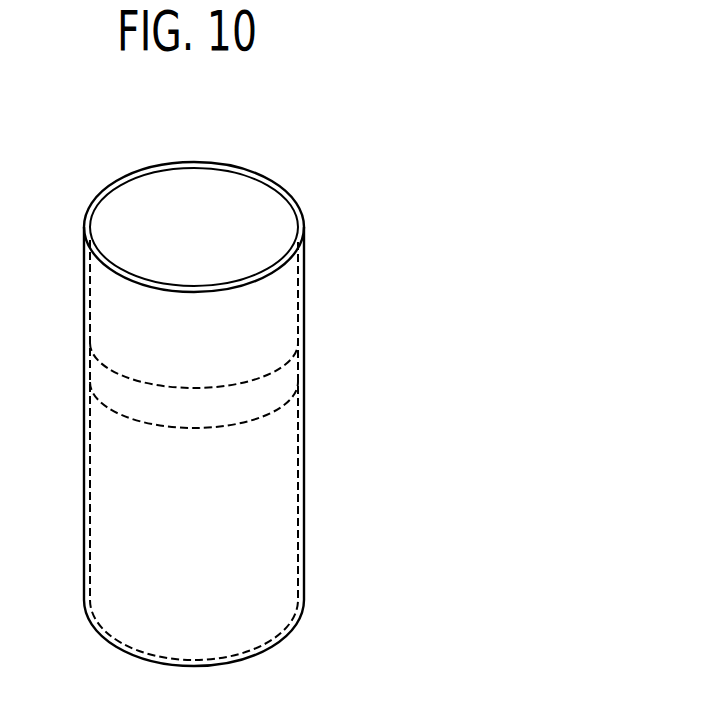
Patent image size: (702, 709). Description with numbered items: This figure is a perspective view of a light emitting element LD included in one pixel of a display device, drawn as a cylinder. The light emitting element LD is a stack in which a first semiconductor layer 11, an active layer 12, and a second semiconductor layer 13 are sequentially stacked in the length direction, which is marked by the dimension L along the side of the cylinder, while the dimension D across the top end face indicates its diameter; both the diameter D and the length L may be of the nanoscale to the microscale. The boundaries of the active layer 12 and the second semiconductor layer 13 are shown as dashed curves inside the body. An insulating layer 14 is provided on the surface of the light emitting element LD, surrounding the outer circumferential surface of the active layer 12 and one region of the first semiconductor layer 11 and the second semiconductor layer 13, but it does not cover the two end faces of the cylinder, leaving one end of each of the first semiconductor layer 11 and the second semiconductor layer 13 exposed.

The first semiconductor layer 11 is at (283, 582).
The active layer 12 is at (267, 401).
The second semiconductor layer 13 is at (267, 355).
The insulating layer 14 is at (305, 300).
The light emitting element LD is at (338, 172).
The diameter D is at (302, 227).
The length L is at (84, 227).